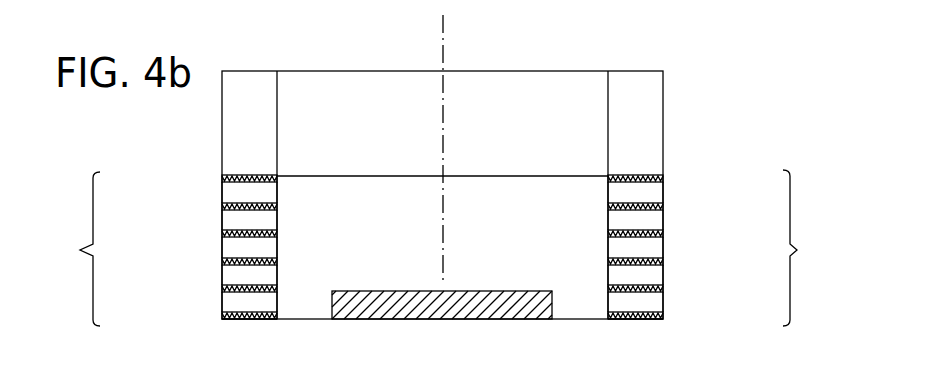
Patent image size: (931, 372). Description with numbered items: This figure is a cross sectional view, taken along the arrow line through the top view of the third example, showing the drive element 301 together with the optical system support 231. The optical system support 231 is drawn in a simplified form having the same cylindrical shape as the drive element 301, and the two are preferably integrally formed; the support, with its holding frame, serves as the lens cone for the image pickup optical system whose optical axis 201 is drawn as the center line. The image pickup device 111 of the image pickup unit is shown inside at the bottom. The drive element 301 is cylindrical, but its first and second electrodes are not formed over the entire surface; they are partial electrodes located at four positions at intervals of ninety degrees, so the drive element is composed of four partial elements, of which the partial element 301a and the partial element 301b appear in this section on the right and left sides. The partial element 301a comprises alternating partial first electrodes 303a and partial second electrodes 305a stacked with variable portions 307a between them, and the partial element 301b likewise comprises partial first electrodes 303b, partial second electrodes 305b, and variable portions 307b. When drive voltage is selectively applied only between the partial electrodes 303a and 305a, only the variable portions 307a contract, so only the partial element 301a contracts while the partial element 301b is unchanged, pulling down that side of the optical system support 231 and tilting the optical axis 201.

The optical axis 201 is at (444, 42).
The optical system support 231 is at (663, 99).
The drive element 301 is at (814, 110).
The image pickup device 111 is at (520, 291).
The partial element 301a is at (736, 248).
The partial element 301b is at (147, 249).
The first electrode 303a is at (663, 178).
The second electrode 305a is at (663, 206).
The variable portions 307a is at (663, 192).
The first electrode 303b is at (222, 178).
The second electrode 305b is at (222, 206).
The variable portions 307b is at (222, 192).